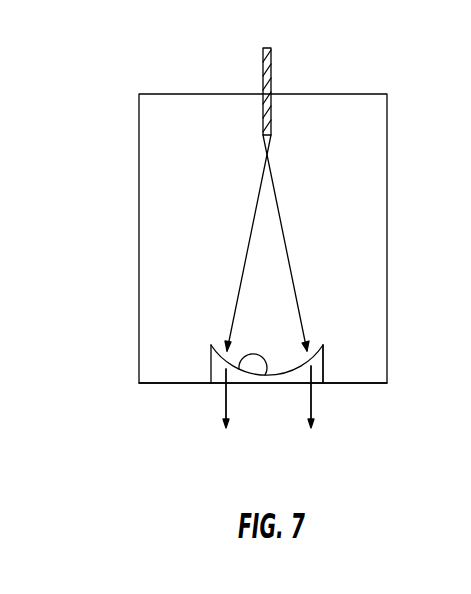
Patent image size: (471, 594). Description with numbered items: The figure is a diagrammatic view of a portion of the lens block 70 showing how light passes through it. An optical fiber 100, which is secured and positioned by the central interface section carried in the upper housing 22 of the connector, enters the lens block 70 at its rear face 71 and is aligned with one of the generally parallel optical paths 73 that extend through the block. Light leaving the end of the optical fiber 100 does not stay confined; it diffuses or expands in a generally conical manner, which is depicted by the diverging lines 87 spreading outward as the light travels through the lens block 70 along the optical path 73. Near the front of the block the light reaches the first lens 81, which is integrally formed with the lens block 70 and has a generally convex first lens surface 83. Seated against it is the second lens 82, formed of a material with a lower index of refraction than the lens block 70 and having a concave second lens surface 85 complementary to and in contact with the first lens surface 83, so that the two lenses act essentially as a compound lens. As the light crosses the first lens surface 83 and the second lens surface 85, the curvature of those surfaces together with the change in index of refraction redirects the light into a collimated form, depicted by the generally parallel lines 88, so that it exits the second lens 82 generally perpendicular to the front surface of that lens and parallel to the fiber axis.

The lens block 70 is at (108, 102).
The rear face 71 is at (210, 94).
The optical path 73 is at (166, 237).
The optical fiber 100 is at (272, 75).
The diverging lines 87 is at (248, 232).
The first lens 81 is at (314, 329).
The second lens 82 is at (323, 368).
The second lens surface 85 is at (290, 374).
The first lens surface 83 is at (266, 378).
The generally parallel lines 88 is at (226, 402).
The upper housing 22 is at (368, 383).